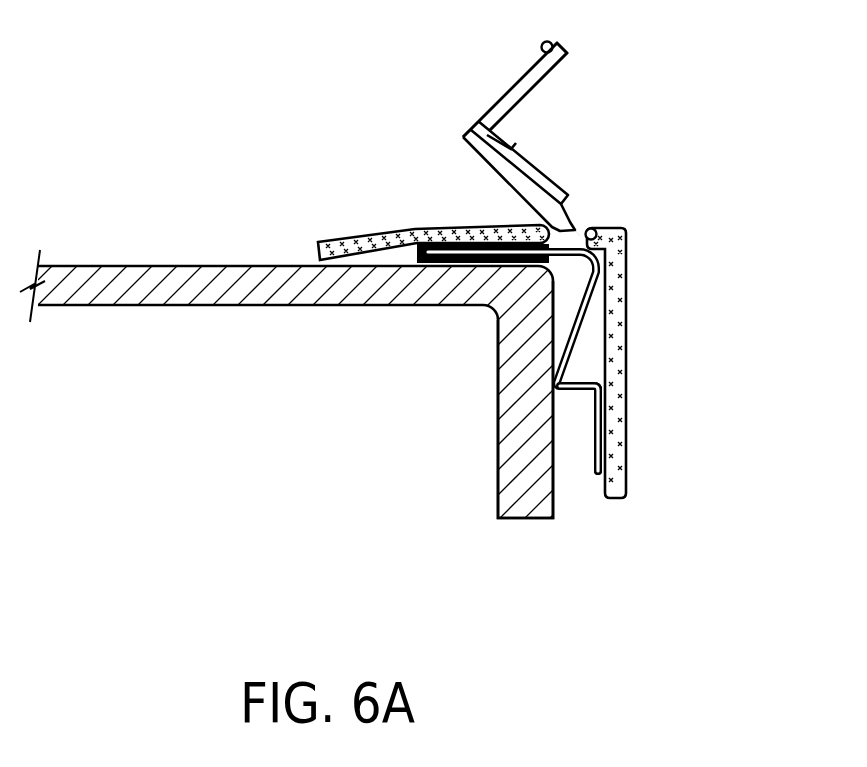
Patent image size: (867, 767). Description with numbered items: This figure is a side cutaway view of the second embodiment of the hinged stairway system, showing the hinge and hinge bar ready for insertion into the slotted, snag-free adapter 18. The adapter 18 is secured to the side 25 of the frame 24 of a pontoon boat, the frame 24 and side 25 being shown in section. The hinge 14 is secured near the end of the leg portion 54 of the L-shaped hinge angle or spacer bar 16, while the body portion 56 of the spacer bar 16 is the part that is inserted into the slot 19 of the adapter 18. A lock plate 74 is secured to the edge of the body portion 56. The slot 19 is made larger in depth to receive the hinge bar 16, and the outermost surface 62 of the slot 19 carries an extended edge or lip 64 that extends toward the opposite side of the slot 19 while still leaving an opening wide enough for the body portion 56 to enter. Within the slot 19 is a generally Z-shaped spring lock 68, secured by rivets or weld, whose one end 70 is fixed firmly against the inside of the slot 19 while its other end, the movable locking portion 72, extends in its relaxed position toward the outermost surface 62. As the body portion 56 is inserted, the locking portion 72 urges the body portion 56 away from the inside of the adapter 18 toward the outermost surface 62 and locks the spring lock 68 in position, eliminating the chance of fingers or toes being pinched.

The hinge 14 is at (549, 41).
The hinge angle or spacer bar 16 is at (551, 76).
The slotted, snag-free adapter 18 is at (372, 254).
The slot 19 is at (587, 221).
The frame 24 is at (157, 262).
The side 25 is at (520, 453).
The leg portion 54 is at (523, 88).
The body portion 56 is at (500, 163).
The outermost surface 62 is at (602, 356).
The extended edge or lip 64 is at (596, 229).
The spring lock 68 is at (437, 272).
The one end 70 is at (603, 408).
The locking portion 72 is at (606, 261).
The lock plate 74 is at (485, 134).